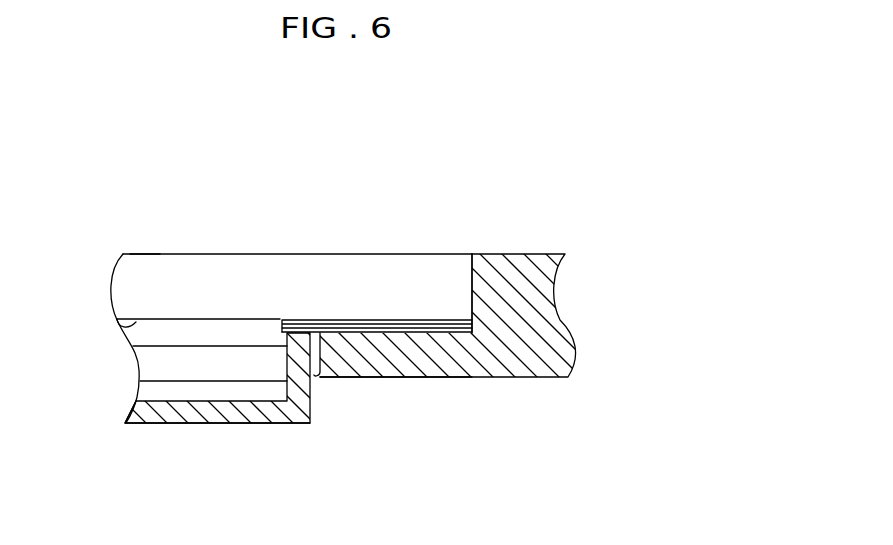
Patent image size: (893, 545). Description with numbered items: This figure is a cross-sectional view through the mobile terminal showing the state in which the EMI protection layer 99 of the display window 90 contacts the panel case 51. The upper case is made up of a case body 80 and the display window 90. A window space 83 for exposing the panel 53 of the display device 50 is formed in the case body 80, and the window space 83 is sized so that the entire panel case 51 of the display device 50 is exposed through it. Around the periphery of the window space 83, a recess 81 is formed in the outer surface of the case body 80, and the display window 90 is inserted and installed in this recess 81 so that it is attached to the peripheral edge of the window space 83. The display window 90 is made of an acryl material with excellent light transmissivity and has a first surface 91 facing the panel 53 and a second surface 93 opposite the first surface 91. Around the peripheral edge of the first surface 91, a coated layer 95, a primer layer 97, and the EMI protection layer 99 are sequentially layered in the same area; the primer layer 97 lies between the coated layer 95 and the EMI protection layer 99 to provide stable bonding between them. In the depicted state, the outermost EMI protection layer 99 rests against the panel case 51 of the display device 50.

The display device 50 is at (268, 424).
The panel case 51 is at (177, 419).
The panel 53 is at (142, 363).
The case body 80 is at (518, 262).
The recess 81 is at (472, 275).
The window space 83 is at (314, 375).
The display window 90 is at (200, 261).
The first surface 91 is at (147, 254).
The second surface 93 is at (127, 333).
The coated layer 95 is at (312, 323).
The primer layer 97 is at (355, 326).
The EMI protection layer 99 is at (400, 330).